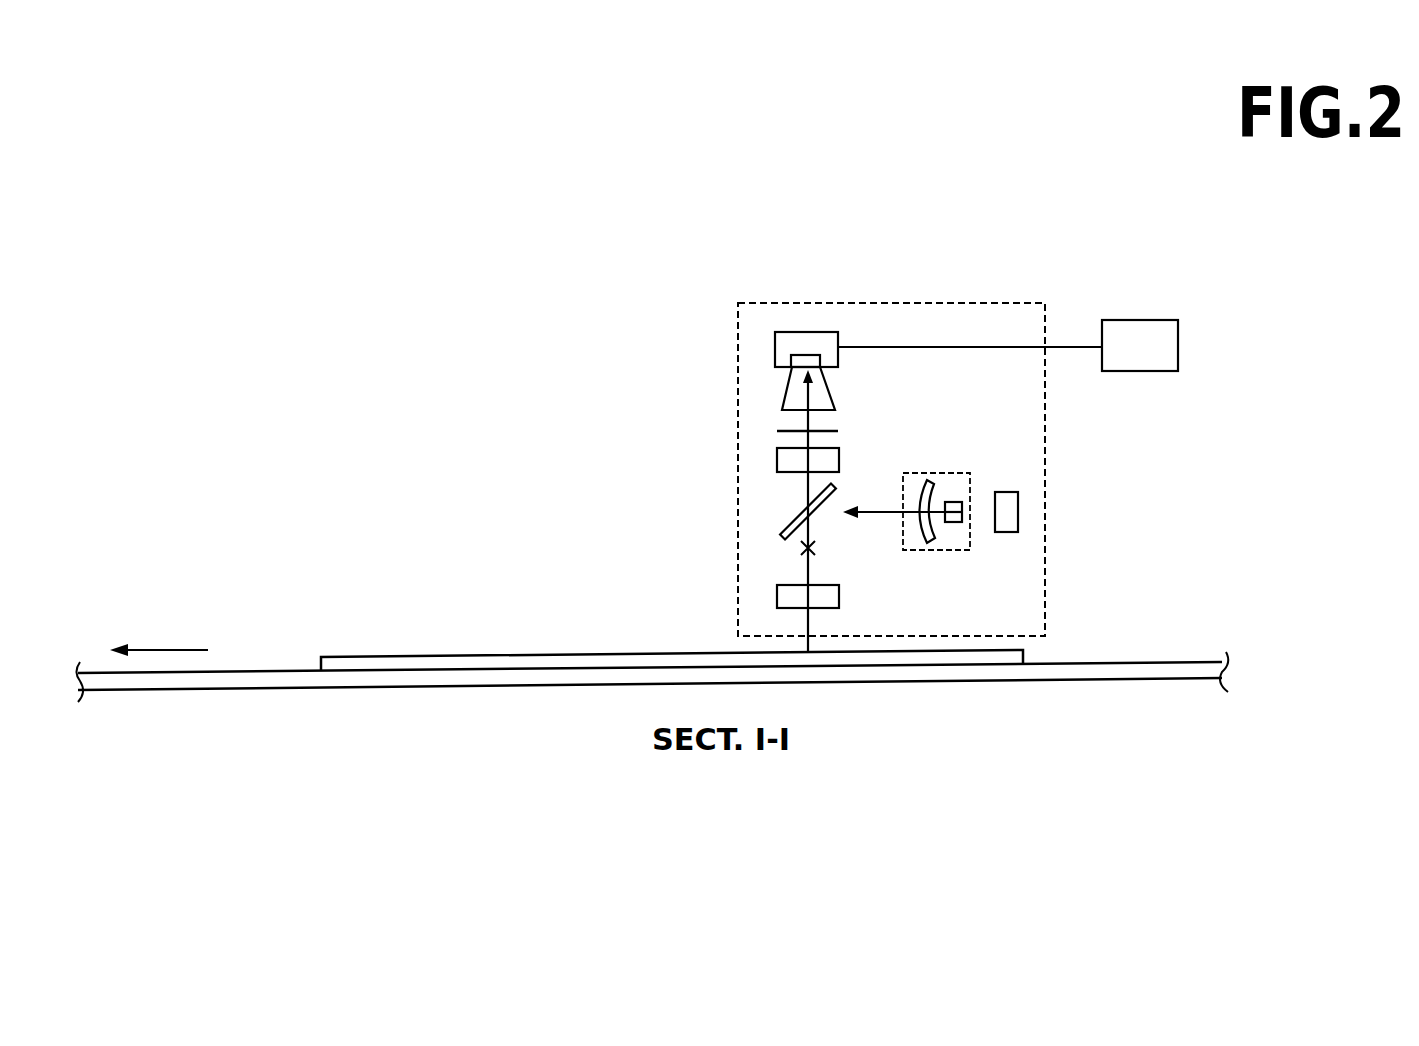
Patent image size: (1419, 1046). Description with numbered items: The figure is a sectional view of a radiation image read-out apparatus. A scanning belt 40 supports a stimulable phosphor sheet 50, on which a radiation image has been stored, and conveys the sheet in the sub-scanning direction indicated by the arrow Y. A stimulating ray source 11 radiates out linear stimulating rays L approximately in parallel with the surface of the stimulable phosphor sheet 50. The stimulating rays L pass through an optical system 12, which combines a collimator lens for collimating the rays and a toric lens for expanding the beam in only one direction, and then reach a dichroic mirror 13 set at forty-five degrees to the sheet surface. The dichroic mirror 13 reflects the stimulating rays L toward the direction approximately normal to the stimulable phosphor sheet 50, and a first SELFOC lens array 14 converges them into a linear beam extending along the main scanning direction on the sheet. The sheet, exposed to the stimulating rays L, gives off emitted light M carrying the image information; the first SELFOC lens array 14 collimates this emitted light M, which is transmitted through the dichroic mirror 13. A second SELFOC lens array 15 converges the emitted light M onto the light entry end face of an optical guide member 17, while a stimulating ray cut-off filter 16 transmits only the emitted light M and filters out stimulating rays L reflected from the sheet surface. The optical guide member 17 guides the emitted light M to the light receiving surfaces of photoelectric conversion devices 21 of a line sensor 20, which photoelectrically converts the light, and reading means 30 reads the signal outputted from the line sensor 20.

The stimulating ray source 11 is at (1003, 492).
The optical system 12 is at (928, 472).
The dichroic mirror 13 is at (780, 545).
The first SELFOC lens array 14 is at (777, 607).
The second SELFOC lens array 15 is at (787, 486).
The stimulating ray cut-off filter 16 is at (787, 429).
The optical guide member 17 is at (789, 378).
The line sensor 20 is at (772, 324).
The photoelectric conversion device 21 is at (805, 355).
The reading means 30 is at (1138, 320).
The scanning belt 40 is at (1135, 662).
The stimulable phosphor sheet 50 is at (377, 657).
The stimulating rays L is at (875, 512).
The emitted light M is at (810, 422).
The sub-scanning direction Y is at (159, 636).